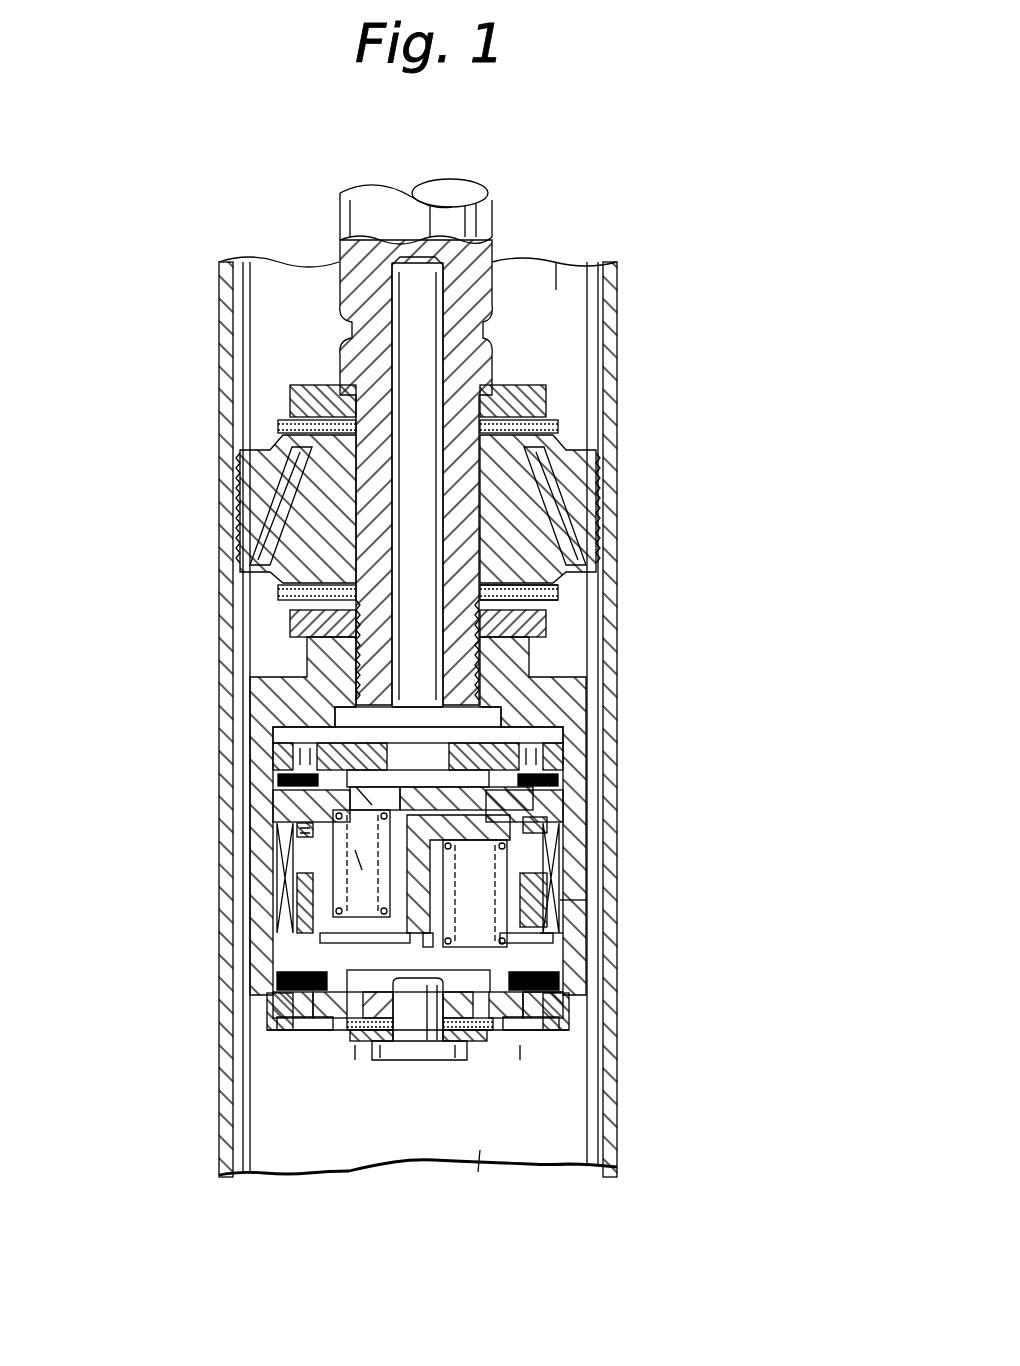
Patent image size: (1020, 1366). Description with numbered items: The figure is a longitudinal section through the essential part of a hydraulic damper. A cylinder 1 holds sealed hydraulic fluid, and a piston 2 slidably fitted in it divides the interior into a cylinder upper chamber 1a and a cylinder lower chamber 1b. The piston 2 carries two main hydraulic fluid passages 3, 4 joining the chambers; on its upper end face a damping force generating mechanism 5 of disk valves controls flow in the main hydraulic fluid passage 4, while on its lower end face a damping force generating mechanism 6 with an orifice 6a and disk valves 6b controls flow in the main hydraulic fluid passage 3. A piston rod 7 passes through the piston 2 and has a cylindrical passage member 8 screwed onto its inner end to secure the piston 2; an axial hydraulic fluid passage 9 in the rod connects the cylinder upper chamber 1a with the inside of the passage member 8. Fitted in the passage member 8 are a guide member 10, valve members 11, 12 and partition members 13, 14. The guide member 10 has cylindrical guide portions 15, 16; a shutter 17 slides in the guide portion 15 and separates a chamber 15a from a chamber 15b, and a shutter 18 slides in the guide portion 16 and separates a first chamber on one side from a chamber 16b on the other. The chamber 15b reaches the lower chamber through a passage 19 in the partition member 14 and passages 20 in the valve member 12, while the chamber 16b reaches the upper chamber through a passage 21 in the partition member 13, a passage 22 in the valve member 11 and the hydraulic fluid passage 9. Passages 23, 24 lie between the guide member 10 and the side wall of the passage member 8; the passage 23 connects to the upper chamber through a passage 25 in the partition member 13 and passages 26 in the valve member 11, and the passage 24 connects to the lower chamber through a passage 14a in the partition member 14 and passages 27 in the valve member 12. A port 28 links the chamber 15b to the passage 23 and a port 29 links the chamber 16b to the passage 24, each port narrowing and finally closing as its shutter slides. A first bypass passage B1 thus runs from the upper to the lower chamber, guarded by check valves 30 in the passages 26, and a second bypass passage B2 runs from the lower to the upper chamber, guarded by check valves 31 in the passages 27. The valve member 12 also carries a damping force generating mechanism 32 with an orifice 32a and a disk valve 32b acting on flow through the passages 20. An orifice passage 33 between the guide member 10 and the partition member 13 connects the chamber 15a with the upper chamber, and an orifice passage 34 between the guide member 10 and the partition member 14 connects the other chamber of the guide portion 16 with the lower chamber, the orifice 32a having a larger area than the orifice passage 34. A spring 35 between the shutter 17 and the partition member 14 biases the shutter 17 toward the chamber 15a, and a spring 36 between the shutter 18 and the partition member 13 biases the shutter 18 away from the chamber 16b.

The cylinder 1 is at (615, 270).
The cylinder upper chamber 1a is at (556, 277).
The cylinder lower chamber 1b is at (480, 1150).
The piston 2 is at (600, 500).
The main hydraulic fluid passage 3 is at (570, 432).
The main hydraulic fluid passage 4 is at (283, 589).
The damping force generating mechanism 5 is at (283, 427).
The damping force generating mechanism 6 is at (728, 552).
The orifice 6a is at (585, 583).
The disk valves 6b is at (585, 600).
The piston rod 7 is at (390, 200).
The passage member 8 is at (565, 690).
The hydraulic fluid passage 9 is at (420, 385).
The guide member 10 is at (560, 900).
The valve member 11 is at (540, 740).
The valve member 12 is at (500, 1040).
The partition member 13 is at (310, 805).
The partition member 14 is at (325, 940).
The passage 14a is at (300, 980).
The guide portion 15 is at (520, 855).
The chamber 15a is at (520, 823).
The chamber 15b is at (555, 1000).
The guide portion 16 is at (333, 880).
The chamber 16b is at (357, 857).
The shutter 17 is at (565, 883).
The shutter 18 is at (275, 913).
The passage 19 is at (480, 1056).
The passages 20 is at (355, 1045).
The passage 21 is at (400, 758).
The passage 22 is at (363, 800).
The passage 23 is at (520, 968).
The passage 24 is at (310, 965).
The passage 25 is at (520, 800).
The passages 26 is at (290, 750).
The passages 27 is at (280, 1010).
The port 28 is at (552, 932).
The port 29 is at (305, 880).
The check valves 30 is at (330, 757).
The check valves 31 is at (300, 1000).
The damping force generating mechanism 32 is at (736, 1190).
The orifice 32a is at (540, 1045).
The disk valve 32b is at (545, 1050).
The orifice passage 33 is at (520, 705).
The orifice passage 34 is at (300, 1025).
The spring 35 is at (560, 1015).
The spring 36 is at (300, 780).
The first bypass passage B1 is at (548, 952).
The second bypass passage B2 is at (262, 924).